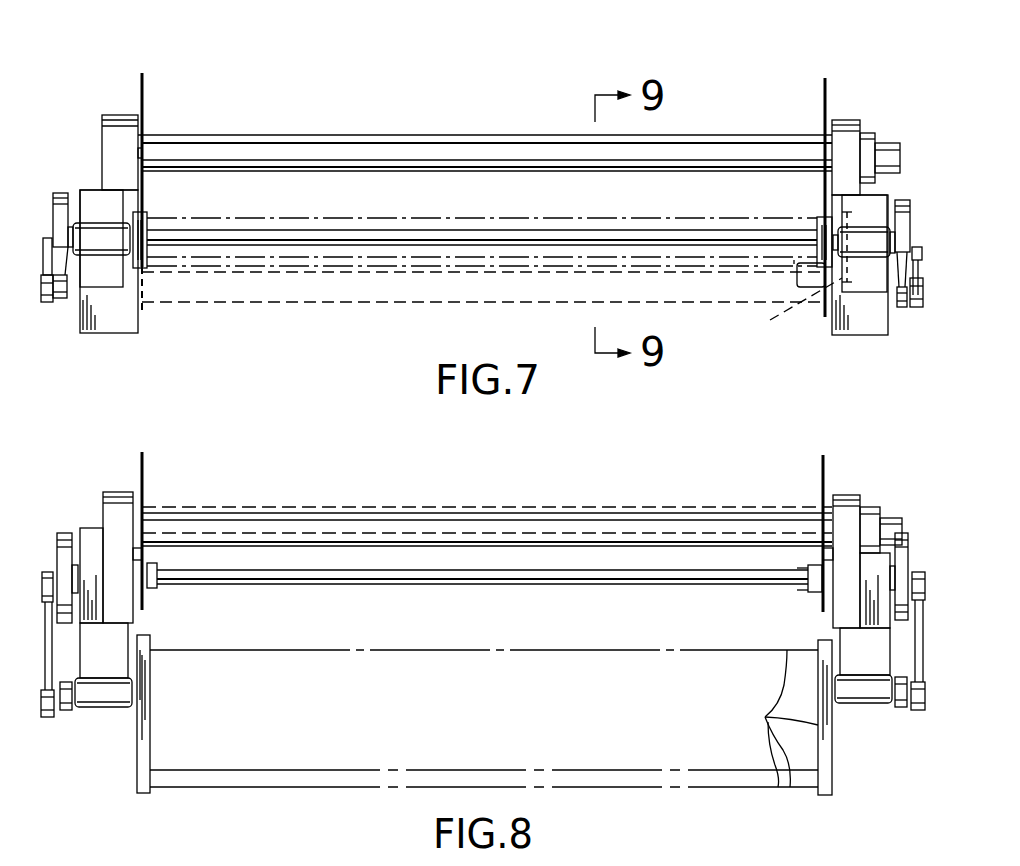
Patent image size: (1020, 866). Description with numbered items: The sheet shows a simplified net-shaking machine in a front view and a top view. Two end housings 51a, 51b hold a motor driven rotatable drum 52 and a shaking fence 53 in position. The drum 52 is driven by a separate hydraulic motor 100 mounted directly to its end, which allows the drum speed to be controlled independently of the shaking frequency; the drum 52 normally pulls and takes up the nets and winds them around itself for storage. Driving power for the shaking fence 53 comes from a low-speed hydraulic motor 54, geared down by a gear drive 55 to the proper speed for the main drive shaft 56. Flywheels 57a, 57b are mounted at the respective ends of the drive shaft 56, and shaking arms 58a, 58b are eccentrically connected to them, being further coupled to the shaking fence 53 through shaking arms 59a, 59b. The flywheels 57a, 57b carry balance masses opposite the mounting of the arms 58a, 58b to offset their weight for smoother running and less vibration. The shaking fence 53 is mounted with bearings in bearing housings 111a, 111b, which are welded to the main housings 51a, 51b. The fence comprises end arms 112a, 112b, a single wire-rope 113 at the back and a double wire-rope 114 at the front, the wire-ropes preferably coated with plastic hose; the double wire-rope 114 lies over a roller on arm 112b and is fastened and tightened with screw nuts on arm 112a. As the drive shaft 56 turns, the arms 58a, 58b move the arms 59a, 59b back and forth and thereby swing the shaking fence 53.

In FIG. 7, the end housing 51a is at (848, 318).
In FIG. 7, the end housing 51b is at (128, 320).
In FIG. 7, the rotatable drum 52 is at (705, 135).
In FIG. 8, the rotatable drum 52 is at (487, 526).
In FIG. 8, the shaking fence 53 is at (771, 718).
In FIG. 7, the motor 54 is at (796, 264).
In FIG. 7, the gear drive 55 is at (789, 299).
In FIG. 7, the main drive shaft 56 is at (700, 230).
In FIG. 8, the main drive shaft 56 is at (620, 585).
In FIG. 7, the flywheel 57a is at (903, 200).
In FIG. 8, the flywheel 57a is at (905, 533).
In FIG. 7, the flywheel 57b is at (70, 182).
In FIG. 8, the flywheel 57b is at (63, 533).
In FIG. 7, the shaking arm 58a is at (917, 307).
In FIG. 8, the shaking arm 58a is at (918, 572).
In FIG. 7, the shaking arm 58b is at (47, 302).
In FIG. 8, the shaking arm 58b is at (46, 572).
In FIG. 7, the shaking arm 59a is at (910, 303).
In FIG. 7, the shaking arm 59b is at (62, 298).
In FIG. 8, the shaking arm 59b is at (66, 712).
In FIG. 7, the hydraulic motor 100 is at (877, 132).
In FIG. 8, the hydraulic motor 100 is at (880, 507).
In FIG. 8, the bearing housing 111a is at (868, 660).
In FIG. 8, the bearing housing 111b is at (97, 667).
In FIG. 8, the end arm 112a is at (832, 760).
In FIG. 8, the end arm 112b is at (150, 775).
In FIG. 8, the single wire-rope 113 is at (463, 651).
In FIG. 8, the double wire-rope 114 is at (460, 787).